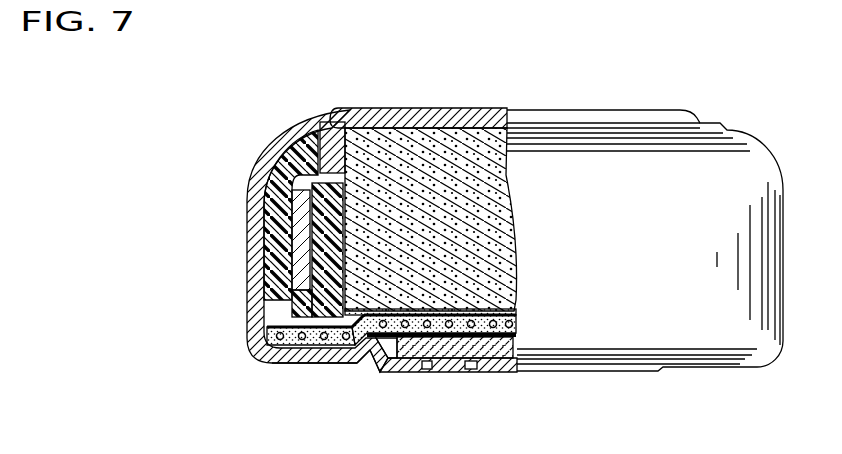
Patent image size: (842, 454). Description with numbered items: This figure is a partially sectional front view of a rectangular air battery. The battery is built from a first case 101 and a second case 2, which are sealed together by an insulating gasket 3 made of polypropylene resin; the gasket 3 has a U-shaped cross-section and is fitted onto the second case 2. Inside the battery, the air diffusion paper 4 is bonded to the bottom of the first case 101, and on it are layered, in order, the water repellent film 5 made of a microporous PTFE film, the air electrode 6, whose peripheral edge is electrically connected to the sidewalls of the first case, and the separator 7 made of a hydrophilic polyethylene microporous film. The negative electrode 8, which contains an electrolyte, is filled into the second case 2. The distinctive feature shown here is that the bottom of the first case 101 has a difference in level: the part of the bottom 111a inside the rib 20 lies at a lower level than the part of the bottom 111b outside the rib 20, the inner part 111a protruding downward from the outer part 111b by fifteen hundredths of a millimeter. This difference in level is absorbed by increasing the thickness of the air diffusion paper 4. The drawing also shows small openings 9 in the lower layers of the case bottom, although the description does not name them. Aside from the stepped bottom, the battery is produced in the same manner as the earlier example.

The second case 2 is at (410, 127).
The insulating gasket 3 is at (262, 164).
The air diffusion paper 4 is at (493, 350).
The water repellent film 5 is at (504, 354).
The air electrode 6 is at (516, 325).
The separator 7 is at (506, 308).
The negative electrode 8 is at (468, 158).
The openings 9 is at (428, 370).
The rib 20 is at (360, 360).
The first case 101 is at (262, 335).
The part of the bottom inside the rib 111a is at (395, 360).
The part of the bottom outside the rib 111b is at (296, 362).